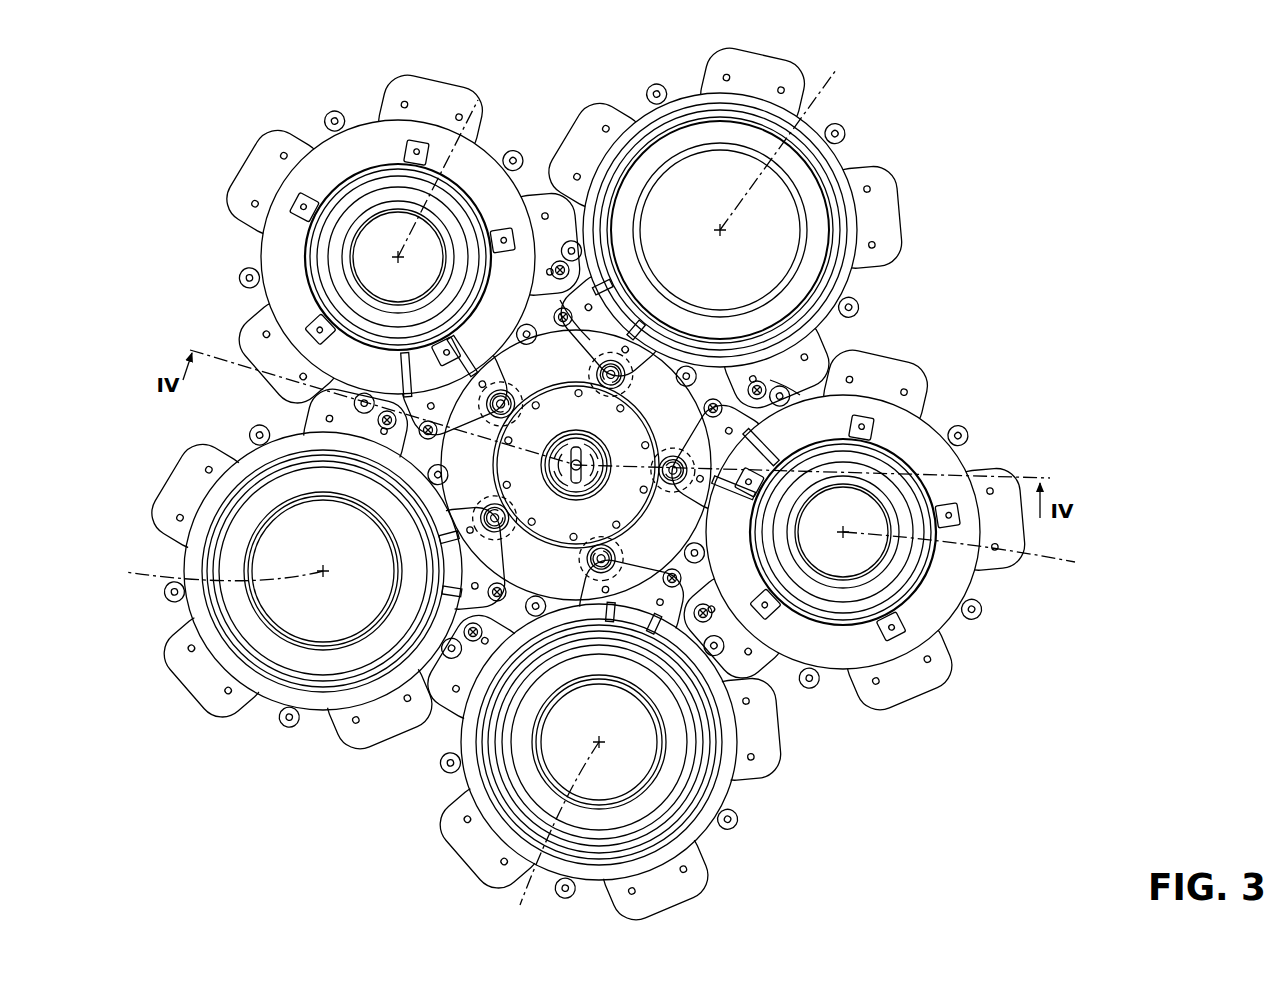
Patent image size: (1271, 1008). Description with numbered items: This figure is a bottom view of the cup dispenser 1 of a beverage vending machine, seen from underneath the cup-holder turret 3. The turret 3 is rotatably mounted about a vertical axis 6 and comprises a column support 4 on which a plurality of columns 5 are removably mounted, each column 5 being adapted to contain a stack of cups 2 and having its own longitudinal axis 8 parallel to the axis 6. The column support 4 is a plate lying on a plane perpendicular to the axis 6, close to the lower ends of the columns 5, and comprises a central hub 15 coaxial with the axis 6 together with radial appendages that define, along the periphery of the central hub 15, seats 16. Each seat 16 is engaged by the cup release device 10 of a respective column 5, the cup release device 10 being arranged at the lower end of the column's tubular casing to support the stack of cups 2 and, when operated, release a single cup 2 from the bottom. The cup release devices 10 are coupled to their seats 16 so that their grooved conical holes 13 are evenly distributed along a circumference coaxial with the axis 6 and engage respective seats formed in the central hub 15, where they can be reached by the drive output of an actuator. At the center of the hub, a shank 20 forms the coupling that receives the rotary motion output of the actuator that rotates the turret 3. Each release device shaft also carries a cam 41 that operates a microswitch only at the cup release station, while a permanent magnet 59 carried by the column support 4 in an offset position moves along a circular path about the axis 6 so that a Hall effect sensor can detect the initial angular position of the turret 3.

The cup dispenser 1 is at (97, 150).
The cup 2 is at (346, 252).
The cup-holder turret 3 is at (988, 250).
The column support 4 is at (780, 372).
The column 5 is at (355, 118).
The vertical axis 6 is at (568, 502).
The longitudinal axis 8 is at (596, 478).
The cup release device 10 is at (300, 172).
The grooved conical hole 13 is at (478, 398).
The central hub 15 is at (627, 323).
The seat 16 is at (516, 318).
The shank 20 is at (608, 488).
The cam 41 is at (673, 450).
The permanent magnet 59 is at (508, 445).